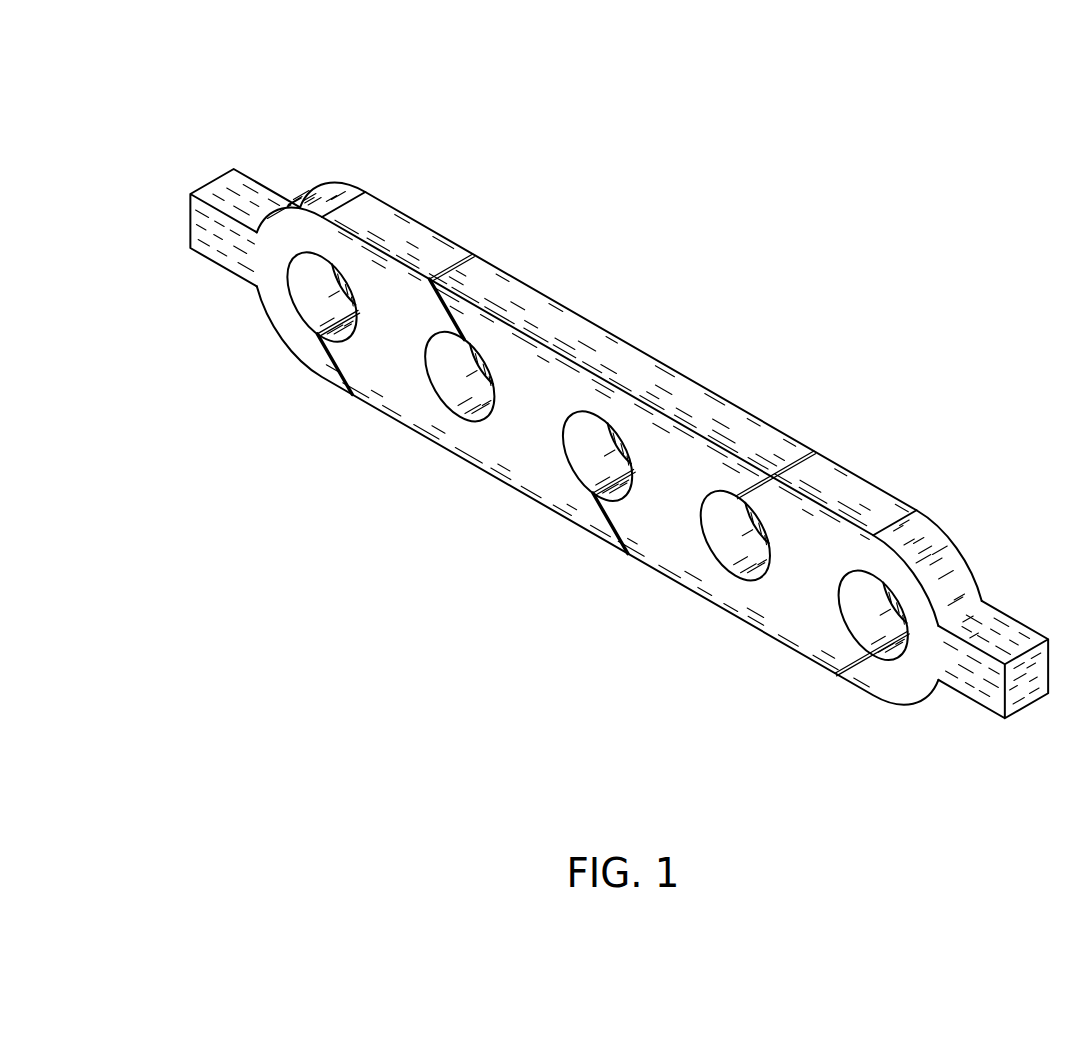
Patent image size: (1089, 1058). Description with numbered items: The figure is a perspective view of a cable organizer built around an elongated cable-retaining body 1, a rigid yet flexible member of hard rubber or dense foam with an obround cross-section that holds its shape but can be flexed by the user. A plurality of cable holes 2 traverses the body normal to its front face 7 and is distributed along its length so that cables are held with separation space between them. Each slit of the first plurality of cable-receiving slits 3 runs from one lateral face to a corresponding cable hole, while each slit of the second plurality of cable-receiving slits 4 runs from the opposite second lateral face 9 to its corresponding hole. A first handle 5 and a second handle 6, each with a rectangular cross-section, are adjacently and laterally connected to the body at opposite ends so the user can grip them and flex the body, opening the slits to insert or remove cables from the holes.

The elongated cable-retaining body 1 is at (340, 127).
The plurality of cable holes 2 is at (306, 288).
The first plurality of cable-receiving slits 3 is at (345, 391).
The second plurality of cable-receiving slits 4 is at (470, 251).
The first handle 5 is at (218, 248).
The second handle 6 is at (1013, 635).
The front face 7 is at (665, 543).
The second lateral face 9 is at (668, 388).